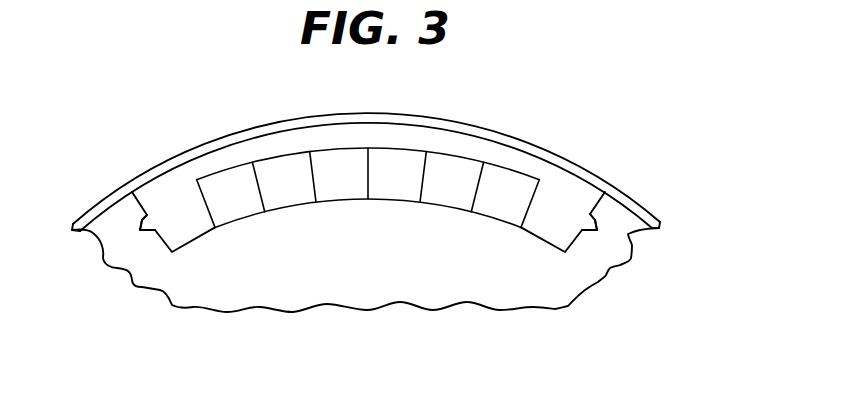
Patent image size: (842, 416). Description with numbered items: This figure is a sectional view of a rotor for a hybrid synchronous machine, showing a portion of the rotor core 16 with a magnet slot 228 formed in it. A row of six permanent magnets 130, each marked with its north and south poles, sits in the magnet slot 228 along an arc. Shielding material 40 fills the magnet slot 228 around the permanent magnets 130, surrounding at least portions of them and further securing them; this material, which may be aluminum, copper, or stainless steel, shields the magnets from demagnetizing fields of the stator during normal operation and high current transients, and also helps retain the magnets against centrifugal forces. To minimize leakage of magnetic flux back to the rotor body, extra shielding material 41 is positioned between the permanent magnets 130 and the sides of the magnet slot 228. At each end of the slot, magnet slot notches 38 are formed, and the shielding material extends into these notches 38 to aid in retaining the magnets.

The shielding material 40 is at (498, 147).
The extra shielding material 41 is at (561, 193).
The magnet slot 228 is at (590, 207).
The rotor core 16 is at (386, 260).
The permanent magnets 130 is at (510, 198).
The magnet slot notches 38 is at (150, 223).